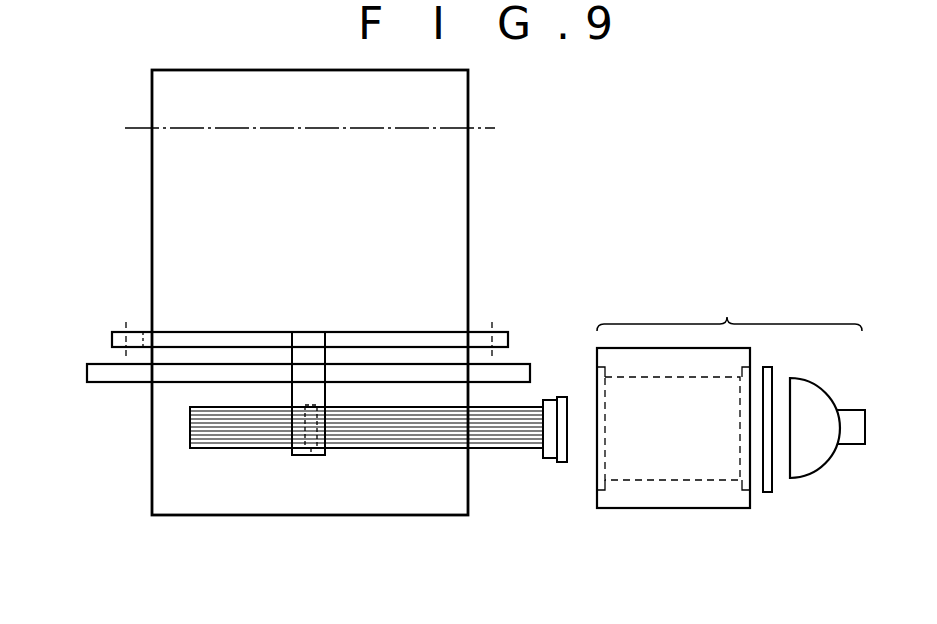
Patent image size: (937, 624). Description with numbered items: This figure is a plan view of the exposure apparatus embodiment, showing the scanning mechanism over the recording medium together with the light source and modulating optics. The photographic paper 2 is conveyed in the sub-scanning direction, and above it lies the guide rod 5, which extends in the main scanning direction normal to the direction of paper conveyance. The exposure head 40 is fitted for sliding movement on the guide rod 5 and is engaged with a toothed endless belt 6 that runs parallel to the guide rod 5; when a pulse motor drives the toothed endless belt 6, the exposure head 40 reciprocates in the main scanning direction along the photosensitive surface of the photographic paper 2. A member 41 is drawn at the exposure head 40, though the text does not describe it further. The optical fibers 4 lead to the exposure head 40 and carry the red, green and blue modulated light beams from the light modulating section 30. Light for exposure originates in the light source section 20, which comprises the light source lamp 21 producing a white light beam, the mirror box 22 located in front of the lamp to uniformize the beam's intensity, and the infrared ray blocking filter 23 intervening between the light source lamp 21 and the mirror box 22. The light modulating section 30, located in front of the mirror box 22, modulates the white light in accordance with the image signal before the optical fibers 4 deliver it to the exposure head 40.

The photographic paper 2 is at (460, 166).
The optical fiber 4 is at (428, 448).
The guide rod 5 is at (522, 363).
The toothed endless belt 6 is at (418, 333).
The light source section 20 is at (729, 308).
The light source lamp 21 is at (805, 468).
The mirror box 22 is at (687, 500).
The infrared ray blocking filter 23 is at (768, 495).
The light modulating section 30 is at (548, 470).
The exposure head 40 is at (322, 390).
The fastening member 41 is at (314, 455).